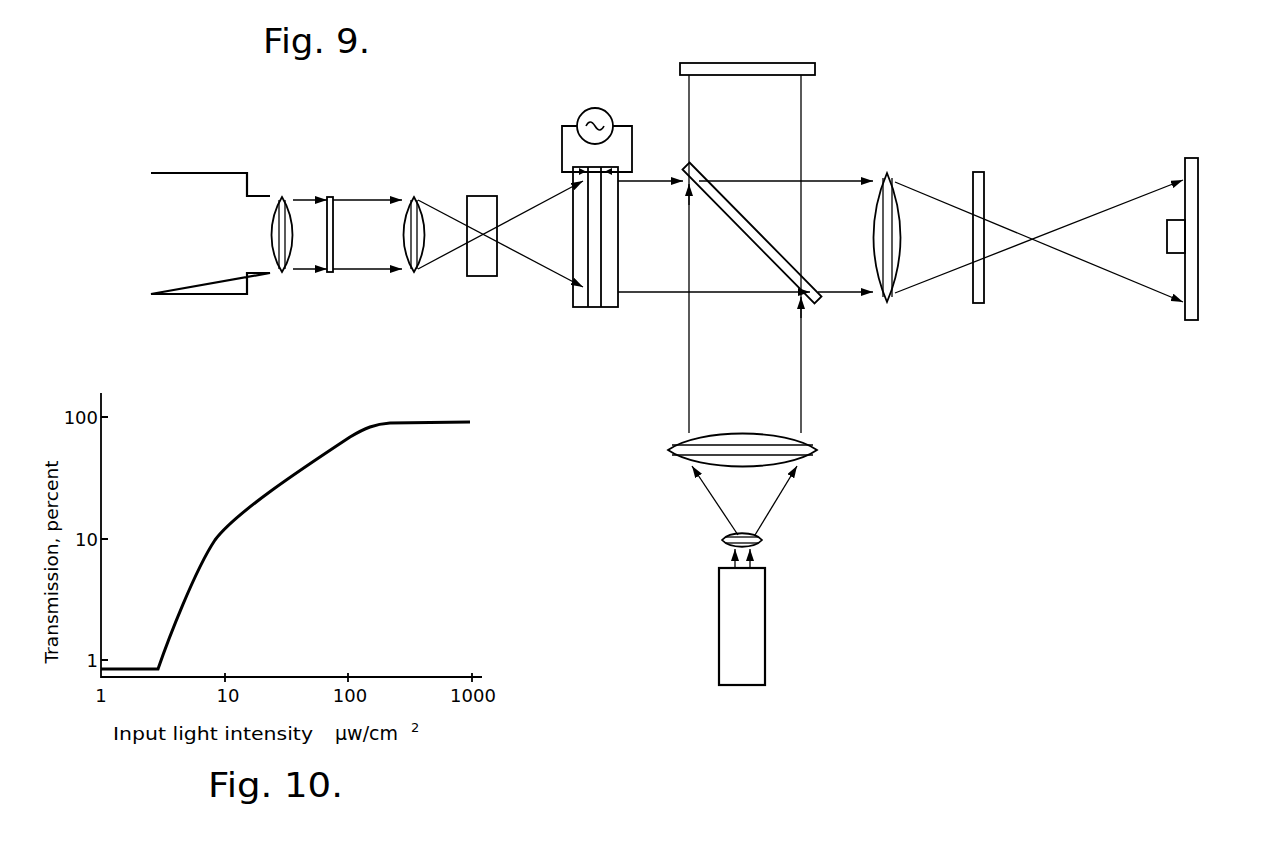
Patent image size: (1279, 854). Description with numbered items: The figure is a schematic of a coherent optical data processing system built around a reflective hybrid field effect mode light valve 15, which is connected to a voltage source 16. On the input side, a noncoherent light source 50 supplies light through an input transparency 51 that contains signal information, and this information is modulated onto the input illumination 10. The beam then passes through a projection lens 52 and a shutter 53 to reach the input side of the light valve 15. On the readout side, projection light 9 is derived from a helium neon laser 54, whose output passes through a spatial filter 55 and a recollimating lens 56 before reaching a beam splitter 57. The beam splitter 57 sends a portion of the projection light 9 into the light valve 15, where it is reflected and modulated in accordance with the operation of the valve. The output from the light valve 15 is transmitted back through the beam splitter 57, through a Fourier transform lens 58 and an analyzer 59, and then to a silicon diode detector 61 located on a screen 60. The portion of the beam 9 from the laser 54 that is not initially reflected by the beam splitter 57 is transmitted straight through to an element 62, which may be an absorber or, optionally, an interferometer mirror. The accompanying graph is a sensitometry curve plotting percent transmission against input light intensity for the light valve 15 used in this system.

The noncoherent light source 50 is at (152, 173).
The input transparency 51 is at (328, 274).
The input illumination 10 is at (382, 271).
The projection lens 52 is at (418, 198).
The shutter 53 is at (469, 277).
The voltage source 16 is at (607, 110).
The light valve 15 is at (602, 309).
The projection light 9 is at (672, 294).
The beam splitter 57 is at (752, 233).
The absorber or interferometer mirror 62 is at (814, 63).
The Fourier transform lens 58 is at (908, 252).
The analyzer 59 is at (979, 177).
The screen 60 is at (1199, 205).
The silicon diode detector 61 is at (1167, 232).
The recollimating lens 56 is at (818, 448).
The spatial filter 55 is at (763, 538).
The helium neon laser 54 is at (766, 641).